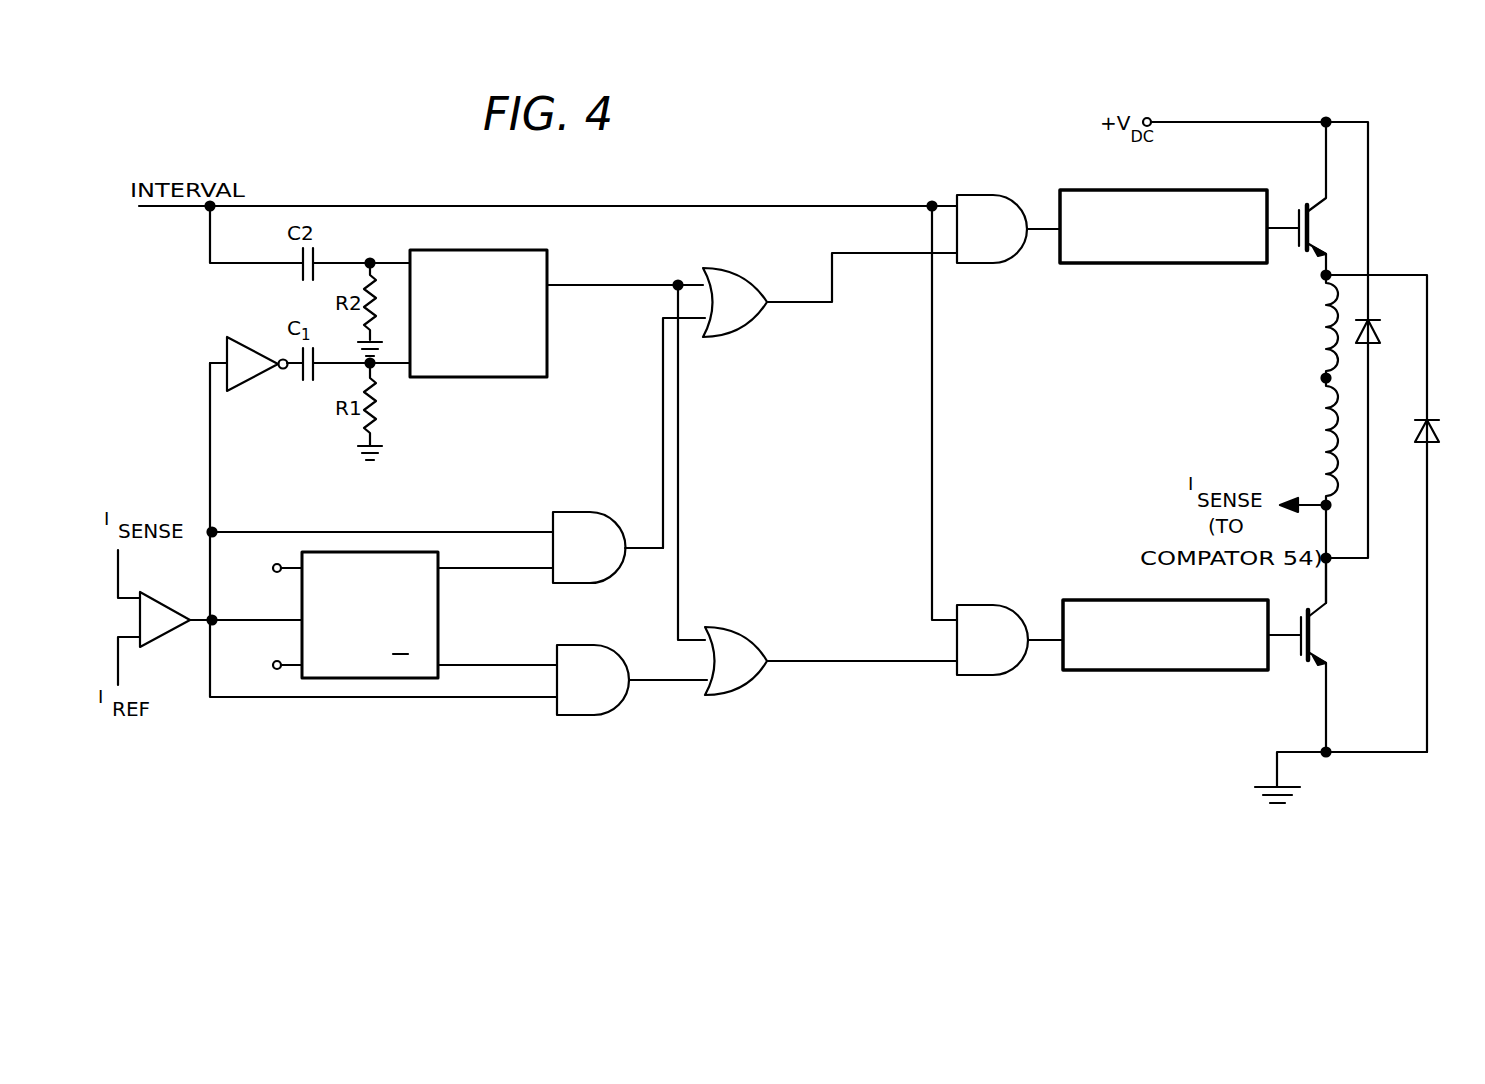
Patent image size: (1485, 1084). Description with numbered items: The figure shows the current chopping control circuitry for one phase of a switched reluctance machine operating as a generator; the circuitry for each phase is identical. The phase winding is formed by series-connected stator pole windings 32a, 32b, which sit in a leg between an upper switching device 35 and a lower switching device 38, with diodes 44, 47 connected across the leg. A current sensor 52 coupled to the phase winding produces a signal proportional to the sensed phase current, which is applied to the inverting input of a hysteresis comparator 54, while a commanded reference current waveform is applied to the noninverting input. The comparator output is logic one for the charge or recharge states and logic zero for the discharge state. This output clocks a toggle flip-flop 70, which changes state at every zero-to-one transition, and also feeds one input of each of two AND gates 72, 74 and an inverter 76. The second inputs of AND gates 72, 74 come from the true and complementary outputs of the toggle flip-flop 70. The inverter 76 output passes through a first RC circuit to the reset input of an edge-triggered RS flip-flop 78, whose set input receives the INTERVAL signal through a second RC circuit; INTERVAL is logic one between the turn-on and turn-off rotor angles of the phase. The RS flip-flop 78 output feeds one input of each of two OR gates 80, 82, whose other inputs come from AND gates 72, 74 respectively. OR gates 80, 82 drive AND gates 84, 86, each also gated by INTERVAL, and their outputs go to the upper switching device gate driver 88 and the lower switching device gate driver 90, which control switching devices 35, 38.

The upper switching device 35 is at (1320, 210).
The lower switching device 38 is at (1320, 612).
The diode 44 is at (1378, 318).
The diode 47 is at (1417, 420).
The current sensor 52 is at (1322, 498).
The hysteresis comparator 54 is at (176, 632).
The toggle flip-flop 70 is at (440, 598).
The AND gate 72 is at (603, 511).
The AND gate 74 is at (605, 644).
The inverter 76 is at (252, 388).
The edge-triggered RS flip-flop 78 is at (548, 312).
The OR gate 80 is at (752, 277).
The OR gate 82 is at (722, 626).
The AND gate 84 is at (978, 194).
The AND gate 86 is at (978, 604).
The upper switching device gate driver 88 is at (1120, 264).
The lower switching device gate driver 90 is at (1120, 671).
The stator pole winding 32a is at (1322, 308).
The stator pole winding 32b is at (1326, 412).